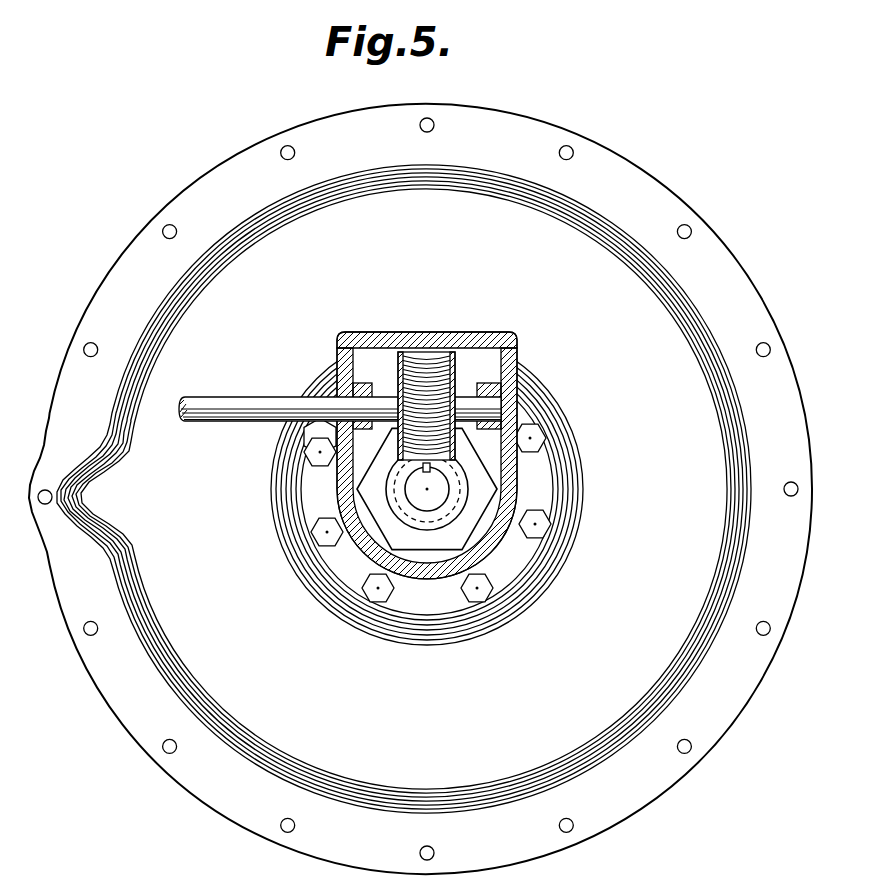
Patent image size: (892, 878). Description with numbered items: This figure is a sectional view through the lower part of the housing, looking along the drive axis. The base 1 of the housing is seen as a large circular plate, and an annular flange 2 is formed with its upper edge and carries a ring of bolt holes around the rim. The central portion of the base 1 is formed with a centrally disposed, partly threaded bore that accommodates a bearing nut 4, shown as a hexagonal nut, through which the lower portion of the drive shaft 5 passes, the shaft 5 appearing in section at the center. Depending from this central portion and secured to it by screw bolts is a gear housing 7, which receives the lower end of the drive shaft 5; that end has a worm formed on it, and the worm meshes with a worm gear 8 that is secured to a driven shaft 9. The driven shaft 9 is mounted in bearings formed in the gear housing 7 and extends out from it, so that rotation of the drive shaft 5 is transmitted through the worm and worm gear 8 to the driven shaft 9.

The base of the housing 1 is at (404, 489).
The annular flange 2 is at (730, 293).
The bearing nut 4 is at (470, 518).
The drive shaft 5 is at (423, 496).
The gear housing 7 is at (514, 345).
The worm gear 8 is at (418, 372).
The driven shaft 9 is at (266, 412).